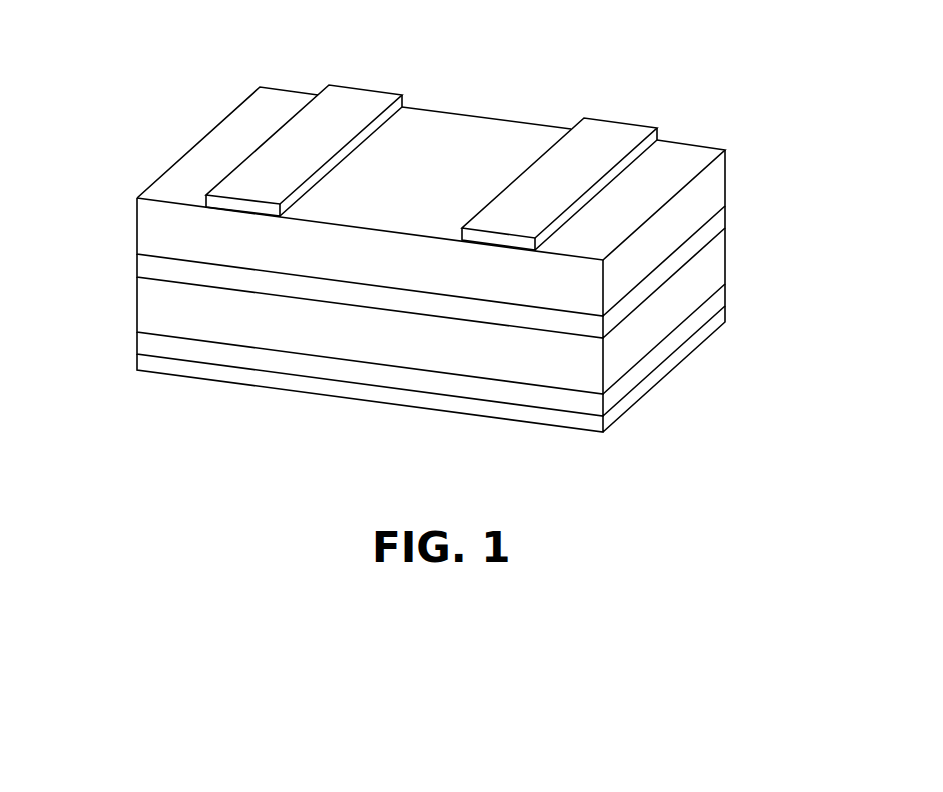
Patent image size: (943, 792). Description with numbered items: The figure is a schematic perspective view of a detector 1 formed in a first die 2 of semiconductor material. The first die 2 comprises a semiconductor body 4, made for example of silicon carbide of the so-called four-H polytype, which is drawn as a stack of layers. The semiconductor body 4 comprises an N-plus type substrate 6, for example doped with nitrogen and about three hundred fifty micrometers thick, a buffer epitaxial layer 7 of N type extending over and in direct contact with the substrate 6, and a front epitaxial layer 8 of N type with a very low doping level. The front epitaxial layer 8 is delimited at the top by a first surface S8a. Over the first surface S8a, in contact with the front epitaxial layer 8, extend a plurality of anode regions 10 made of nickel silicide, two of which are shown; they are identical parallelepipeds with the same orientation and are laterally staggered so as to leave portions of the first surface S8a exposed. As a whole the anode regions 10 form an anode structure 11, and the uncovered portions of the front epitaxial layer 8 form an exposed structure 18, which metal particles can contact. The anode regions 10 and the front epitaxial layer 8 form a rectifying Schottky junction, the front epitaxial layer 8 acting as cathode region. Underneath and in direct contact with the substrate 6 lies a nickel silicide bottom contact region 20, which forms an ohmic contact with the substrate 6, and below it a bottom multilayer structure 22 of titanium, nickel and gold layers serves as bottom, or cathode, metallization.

The detector 1 is at (748, 76).
The first die 2 is at (93, 319).
The semiconductor body 4 is at (370, 339).
The substrate 6 is at (720, 263).
The buffer epitaxial layer 7 is at (147, 264).
The front epitaxial layer 8 is at (148, 223).
The anode regions 10 is at (365, 98).
The anode structure 11 is at (609, 103).
The exposed structure 18 is at (198, 163).
The bottom contact region 20 is at (718, 300).
The bottom multilayer structure 22 is at (660, 363).
The first surface S8a is at (454, 150).